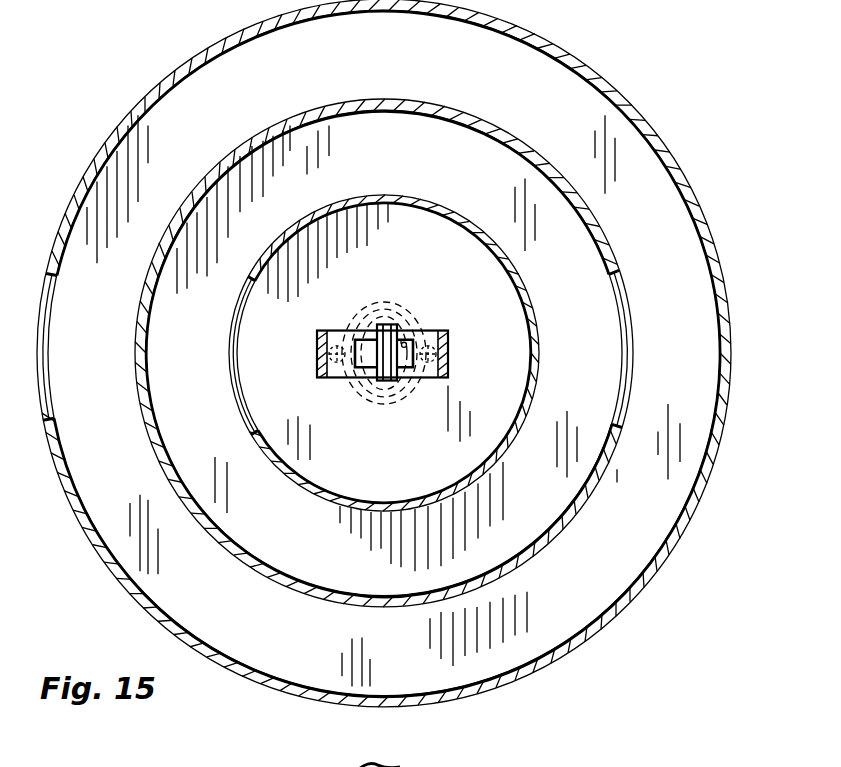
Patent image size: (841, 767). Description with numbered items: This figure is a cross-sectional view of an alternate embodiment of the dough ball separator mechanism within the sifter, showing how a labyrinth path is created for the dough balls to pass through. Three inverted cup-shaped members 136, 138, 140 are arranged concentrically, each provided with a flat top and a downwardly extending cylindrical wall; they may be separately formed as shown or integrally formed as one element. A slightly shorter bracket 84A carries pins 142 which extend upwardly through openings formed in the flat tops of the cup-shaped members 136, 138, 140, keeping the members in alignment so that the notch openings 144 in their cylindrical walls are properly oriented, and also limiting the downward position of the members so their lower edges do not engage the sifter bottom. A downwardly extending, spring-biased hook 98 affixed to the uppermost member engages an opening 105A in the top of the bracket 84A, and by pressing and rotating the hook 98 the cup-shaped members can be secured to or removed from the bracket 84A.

The bracket 84A is at (319, 360).
The hook 98 is at (398, 380).
The opening 105A is at (405, 343).
The inverted cup-shaped member 136 is at (392, 503).
The inverted cup-shaped member 138 is at (307, 590).
The inverted cup-shaped member 140 is at (246, 671).
The pins 142 is at (447, 345).
The notch openings 144 is at (50, 416).